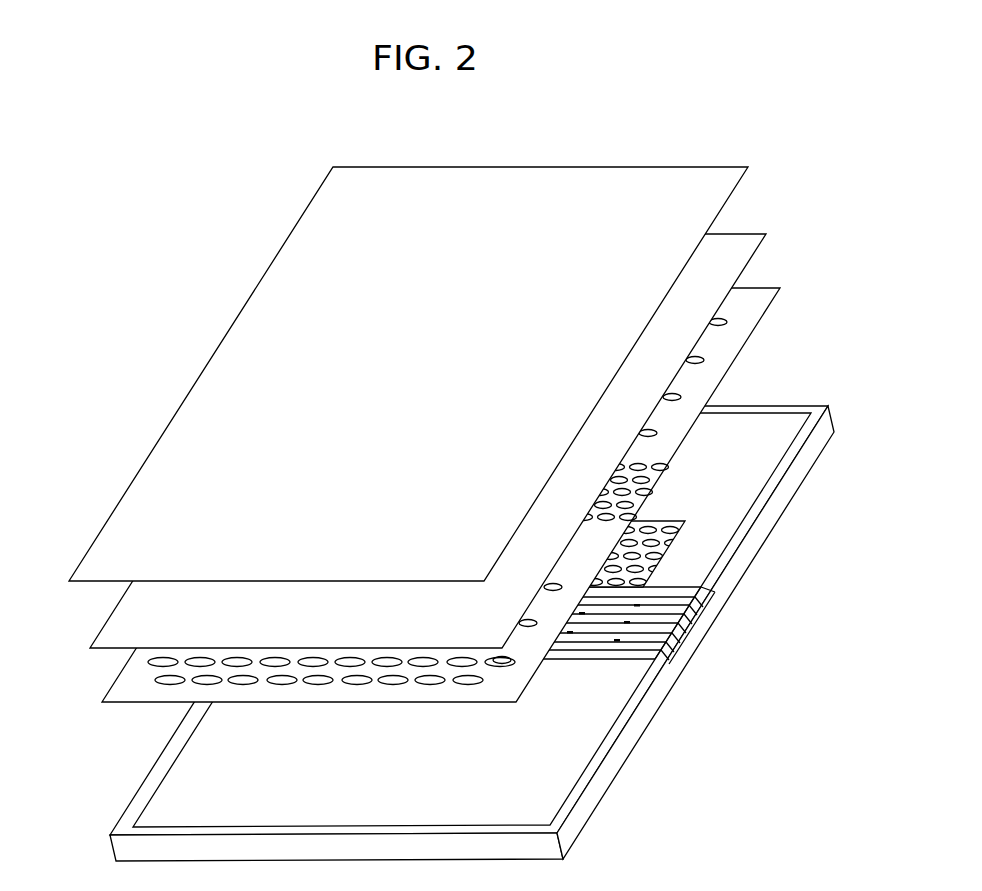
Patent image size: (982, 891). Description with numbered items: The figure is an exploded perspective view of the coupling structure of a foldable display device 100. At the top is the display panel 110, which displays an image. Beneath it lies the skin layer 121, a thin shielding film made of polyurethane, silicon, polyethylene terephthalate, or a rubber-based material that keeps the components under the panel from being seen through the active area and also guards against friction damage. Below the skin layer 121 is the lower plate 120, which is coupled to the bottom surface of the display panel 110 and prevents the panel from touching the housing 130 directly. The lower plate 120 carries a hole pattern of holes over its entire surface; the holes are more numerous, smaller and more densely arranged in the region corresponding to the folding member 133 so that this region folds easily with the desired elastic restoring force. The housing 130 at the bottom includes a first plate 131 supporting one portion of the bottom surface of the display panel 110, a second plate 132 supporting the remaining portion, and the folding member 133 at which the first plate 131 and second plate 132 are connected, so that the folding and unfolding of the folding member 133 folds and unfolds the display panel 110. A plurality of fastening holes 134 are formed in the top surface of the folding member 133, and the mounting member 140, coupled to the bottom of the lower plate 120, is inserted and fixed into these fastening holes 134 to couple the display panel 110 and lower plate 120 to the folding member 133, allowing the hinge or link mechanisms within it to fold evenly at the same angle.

The foldable display device 100 is at (83, 160).
The display panel 110 is at (175, 412).
The skin layer 121 is at (125, 615).
The lower plate 120 is at (115, 683).
The housing 130 is at (480, 633).
The first plate 131 is at (712, 543).
The second plate 132 is at (573, 745).
The folding member 133 is at (667, 614).
The fastening holes 134 is at (667, 647).
The mounting member 140 is at (672, 521).